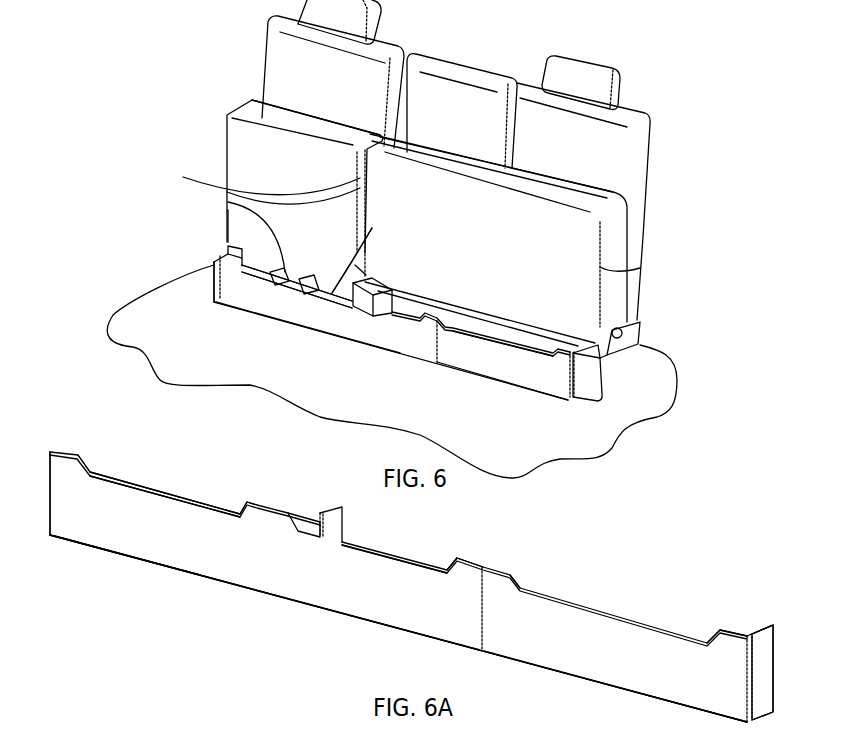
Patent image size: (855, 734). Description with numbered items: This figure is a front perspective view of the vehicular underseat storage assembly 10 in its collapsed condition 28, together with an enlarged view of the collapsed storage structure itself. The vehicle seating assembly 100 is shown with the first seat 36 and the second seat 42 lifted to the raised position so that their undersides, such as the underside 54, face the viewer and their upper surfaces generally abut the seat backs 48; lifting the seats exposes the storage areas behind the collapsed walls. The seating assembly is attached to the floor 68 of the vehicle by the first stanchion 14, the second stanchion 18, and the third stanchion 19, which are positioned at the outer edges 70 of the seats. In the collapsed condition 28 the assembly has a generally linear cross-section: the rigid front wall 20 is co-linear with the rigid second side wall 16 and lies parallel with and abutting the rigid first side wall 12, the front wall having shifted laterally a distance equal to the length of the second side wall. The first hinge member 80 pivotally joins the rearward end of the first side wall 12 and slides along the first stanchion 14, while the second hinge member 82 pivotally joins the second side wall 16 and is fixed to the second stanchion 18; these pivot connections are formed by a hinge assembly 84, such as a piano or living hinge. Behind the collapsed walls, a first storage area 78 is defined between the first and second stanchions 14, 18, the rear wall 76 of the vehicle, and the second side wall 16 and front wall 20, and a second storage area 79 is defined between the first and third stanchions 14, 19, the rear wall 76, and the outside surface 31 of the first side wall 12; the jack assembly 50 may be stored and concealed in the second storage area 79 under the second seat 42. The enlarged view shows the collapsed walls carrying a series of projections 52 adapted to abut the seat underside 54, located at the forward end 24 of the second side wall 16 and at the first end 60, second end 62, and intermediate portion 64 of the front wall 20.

In FIG. 6, the vehicle seating assembly 100 is at (181, 34).
In FIG. 6, the second seat 42 is at (250, 101).
In FIG. 6, the seat backs 48 is at (314, 90).
In FIG. 6, the underside 54 is at (278, 175).
In FIG. 6, the first seat 36 is at (577, 193).
In FIG. 6, the outer edges 70 is at (227, 137).
In FIG. 6, the jack assembly 50 is at (228, 208).
In FIG. 6, the third stanchion 19 is at (228, 248).
In FIG. 6, the first side wall 12 is at (238, 262).
In FIG. 6A, the first side wall 12 is at (183, 492).
In FIG. 6, the collapsed condition 28 is at (230, 313).
In FIG. 6A, the collapsed condition 28 is at (678, 600).
In FIG. 6, the floor 68 is at (169, 362).
In FIG. 6, the outside surface 31 is at (305, 295).
In FIG. 6A, the outside surface 31 is at (237, 505).
In FIG. 6, the front wall 20 is at (327, 317).
In FIG. 6A, the front wall 20 is at (198, 552).
In FIG. 6, the vehicular underseat storage assembly 10 is at (240, 340).
In FIG. 6A, the vehicular underseat storage assembly 10 is at (120, 583).
In FIG. 6, the first stanchion 14 is at (376, 292).
In FIG. 6, the second storage area 79 is at (372, 228).
In FIG. 6, the first hinge member 80 is at (362, 272).
In FIG. 6A, the first hinge member 80 is at (337, 527).
In FIG. 6, the first storage area 78 is at (503, 333).
In FIG. 6, the second hinge member 82 is at (572, 350).
In FIG. 6A, the second hinge member 82 is at (765, 685).
In FIG. 6, the second side wall 16 is at (493, 363).
In FIG. 6A, the second side wall 16 is at (606, 657).
In FIG. 6, the rear wall 76 is at (533, 340).
In FIG. 6, the second stanchion 18 is at (587, 380).
In FIG. 6A, the hinge assembly 84 is at (52, 450).
In FIG. 6A, the projections 52 is at (72, 467).
In FIG. 6A, the first end 60 is at (63, 515).
In FIG. 6A, the intermediate portion 64 is at (260, 565).
In FIG. 6A, the second end 62 is at (453, 610).
In FIG. 6A, the forward end 24 is at (502, 622).